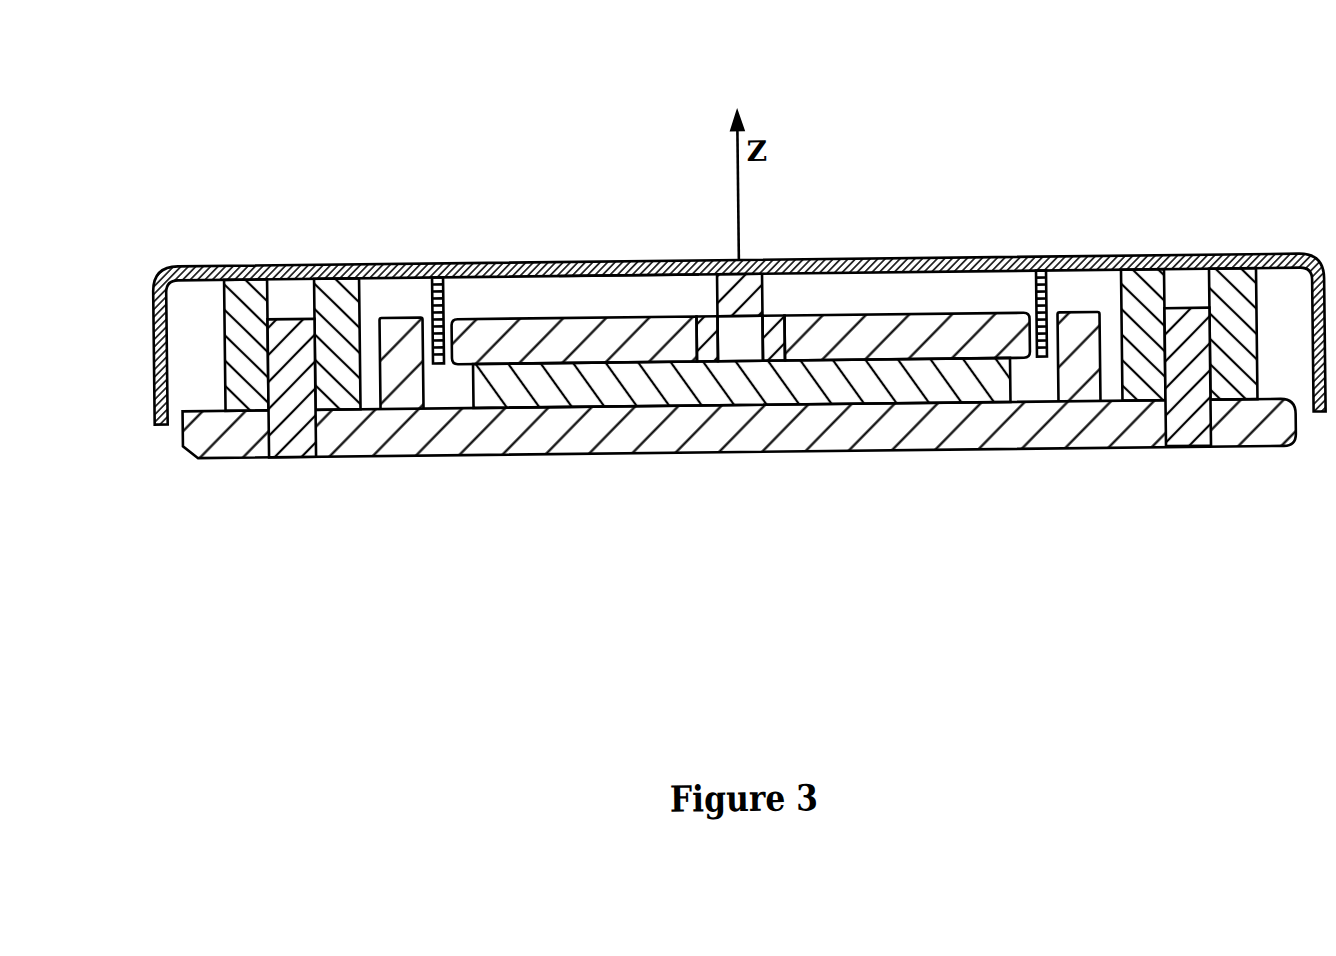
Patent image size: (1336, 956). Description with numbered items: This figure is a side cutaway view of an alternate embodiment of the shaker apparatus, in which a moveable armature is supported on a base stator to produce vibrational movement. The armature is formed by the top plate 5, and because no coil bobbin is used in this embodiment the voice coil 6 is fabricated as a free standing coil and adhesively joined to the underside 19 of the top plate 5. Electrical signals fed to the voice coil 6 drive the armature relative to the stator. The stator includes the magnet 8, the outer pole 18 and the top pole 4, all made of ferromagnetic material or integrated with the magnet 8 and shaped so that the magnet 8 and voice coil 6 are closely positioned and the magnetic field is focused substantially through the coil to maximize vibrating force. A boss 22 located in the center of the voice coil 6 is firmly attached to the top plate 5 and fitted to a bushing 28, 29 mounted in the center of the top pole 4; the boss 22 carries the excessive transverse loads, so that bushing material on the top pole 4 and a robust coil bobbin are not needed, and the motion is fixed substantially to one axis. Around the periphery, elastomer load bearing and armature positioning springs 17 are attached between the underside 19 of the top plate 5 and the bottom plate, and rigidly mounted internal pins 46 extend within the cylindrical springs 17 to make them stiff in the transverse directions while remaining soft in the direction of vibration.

The top pole 4 is at (484, 327).
The top plate 5 is at (1279, 262).
The voice coil 6 is at (1056, 296).
The magnet 8 is at (933, 383).
The springs 17 is at (234, 322).
The outer pole 18 is at (405, 369).
The underside 19 is at (642, 275).
The boss 22 is at (766, 291).
The bushing 28 is at (700, 333).
The bushing 29 is at (770, 337).
The pins 46 is at (294, 415).